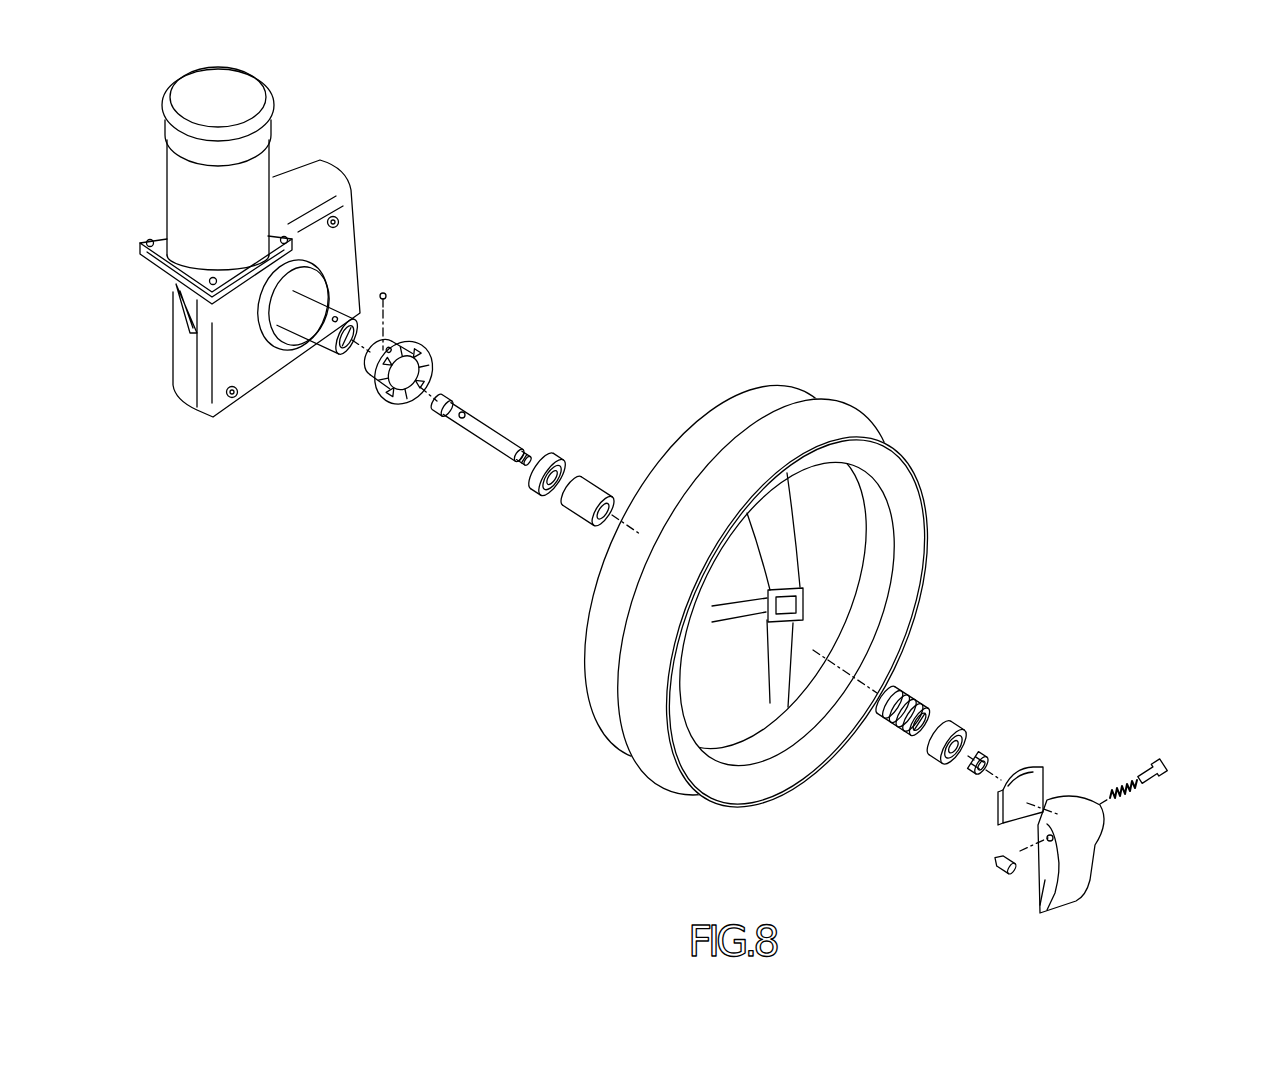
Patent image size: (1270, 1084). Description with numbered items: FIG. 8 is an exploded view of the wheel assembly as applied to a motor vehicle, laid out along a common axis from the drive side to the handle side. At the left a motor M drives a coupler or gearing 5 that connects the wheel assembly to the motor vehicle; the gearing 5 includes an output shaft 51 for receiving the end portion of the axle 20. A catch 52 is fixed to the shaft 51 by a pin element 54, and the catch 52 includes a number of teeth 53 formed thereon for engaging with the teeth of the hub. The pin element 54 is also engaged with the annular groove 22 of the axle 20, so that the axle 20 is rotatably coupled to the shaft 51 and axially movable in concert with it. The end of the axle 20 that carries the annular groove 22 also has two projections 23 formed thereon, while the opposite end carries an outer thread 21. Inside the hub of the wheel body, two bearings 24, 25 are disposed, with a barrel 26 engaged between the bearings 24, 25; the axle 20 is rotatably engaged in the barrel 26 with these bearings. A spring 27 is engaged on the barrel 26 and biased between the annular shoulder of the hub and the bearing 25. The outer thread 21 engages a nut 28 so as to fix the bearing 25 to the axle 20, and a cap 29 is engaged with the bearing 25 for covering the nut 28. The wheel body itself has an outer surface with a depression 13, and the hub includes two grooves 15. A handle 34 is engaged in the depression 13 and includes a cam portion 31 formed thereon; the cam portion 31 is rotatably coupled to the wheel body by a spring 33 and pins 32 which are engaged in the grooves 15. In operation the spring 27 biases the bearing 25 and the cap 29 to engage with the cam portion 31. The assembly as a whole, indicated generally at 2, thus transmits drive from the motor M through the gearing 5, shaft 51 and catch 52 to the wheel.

The motor M is at (180, 170).
The gearing 5 is at (338, 172).
The output shaft 51 is at (333, 347).
The catch 52 is at (398, 342).
The teeth 53 is at (404, 412).
The pin element 54 is at (384, 290).
The wheel assembly 2 is at (528, 402).
The axle 20 is at (497, 449).
The outer thread 21 is at (531, 460).
The annular groove 22 is at (448, 404).
The projections 23 is at (466, 414).
The bearing 24 is at (545, 497).
The barrel 26 is at (585, 508).
The depression 13 is at (793, 573).
The grooves 15 is at (803, 607).
The bearing 25 is at (950, 768).
The spring 27 is at (912, 740).
The nut 28 is at (980, 781).
The cap 29 is at (1010, 826).
The cam portion 31 is at (1092, 822).
The pins 32 is at (1160, 762).
The spring 33 is at (1118, 796).
The handle 34 is at (1046, 884).